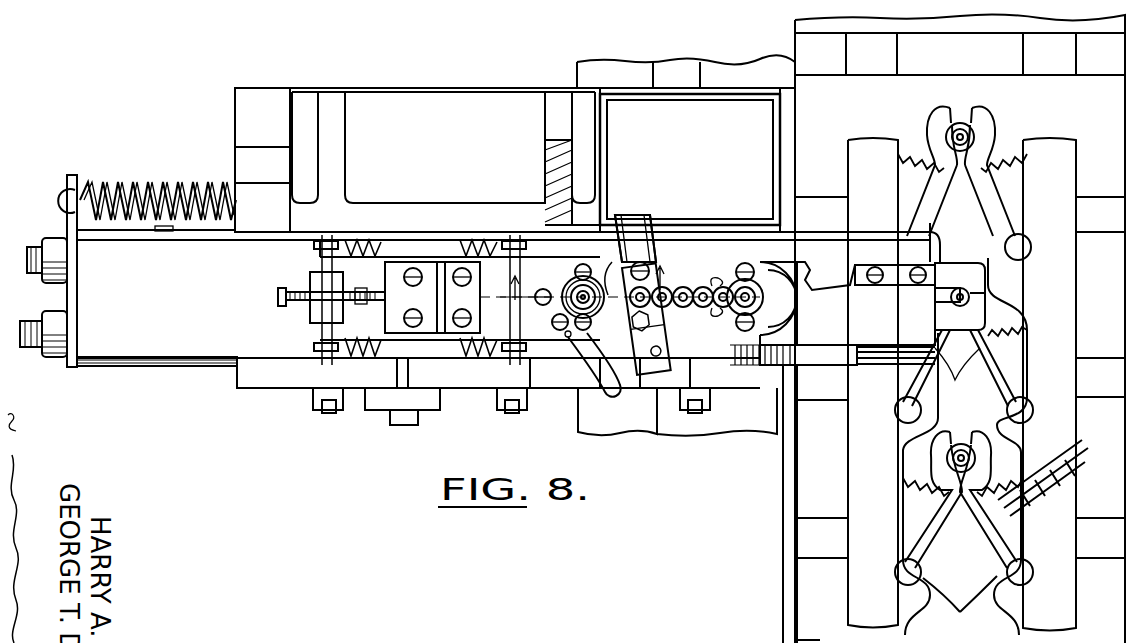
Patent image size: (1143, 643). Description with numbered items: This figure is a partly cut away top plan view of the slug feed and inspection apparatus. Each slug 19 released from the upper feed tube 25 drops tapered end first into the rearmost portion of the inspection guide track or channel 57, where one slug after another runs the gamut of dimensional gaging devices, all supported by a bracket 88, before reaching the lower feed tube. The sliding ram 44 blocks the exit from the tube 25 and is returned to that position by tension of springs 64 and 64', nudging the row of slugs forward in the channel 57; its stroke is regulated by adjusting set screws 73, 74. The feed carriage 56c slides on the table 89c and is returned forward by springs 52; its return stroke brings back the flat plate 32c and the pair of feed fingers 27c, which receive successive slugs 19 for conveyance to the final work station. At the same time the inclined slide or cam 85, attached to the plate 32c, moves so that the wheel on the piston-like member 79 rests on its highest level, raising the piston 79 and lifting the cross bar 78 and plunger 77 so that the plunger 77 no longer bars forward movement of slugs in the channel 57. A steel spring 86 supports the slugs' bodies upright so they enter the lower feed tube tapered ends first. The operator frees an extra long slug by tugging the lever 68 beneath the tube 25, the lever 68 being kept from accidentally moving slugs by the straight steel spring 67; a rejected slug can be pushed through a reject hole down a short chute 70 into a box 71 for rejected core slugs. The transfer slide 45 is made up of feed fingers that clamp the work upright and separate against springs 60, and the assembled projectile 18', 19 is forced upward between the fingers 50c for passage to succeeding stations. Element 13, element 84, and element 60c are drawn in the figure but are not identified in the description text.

The springs 52 is at (113, 187).
The carriage 56c is at (140, 345).
The bracket 88 is at (302, 118).
The box 71 is at (738, 96).
The chute 70 is at (638, 226).
The plunger 77 is at (635, 238).
The piston-like member 79 is at (664, 368).
The set screw 74 is at (368, 272).
The set screw 73 is at (286, 292).
The spring 64' is at (324, 251).
The spring 64 is at (324, 344).
The sliding ram 44 is at (530, 285).
The block 13 is at (530, 298).
The table 89c is at (262, 375).
The upper feed tube 25 is at (568, 288).
The inspection guide track or channel 57 is at (720, 314).
The slug 19 is at (596, 272).
The finger 84 is at (643, 380).
The straight steel spring 67 is at (571, 340).
The lever 68 is at (605, 398).
The cross bar 78 is at (662, 368).
The inclined slide or cam 85 is at (818, 355).
The spring 86 is at (780, 282).
The flat plate 32c is at (808, 252).
The feed fingers 27c is at (948, 308).
The jacket blank 18' is at (960, 345).
The spring 60c is at (1014, 314).
The springs 60 is at (1028, 500).
The feed fingers 50c is at (964, 376).
The transfer slide 45 is at (960, 604).